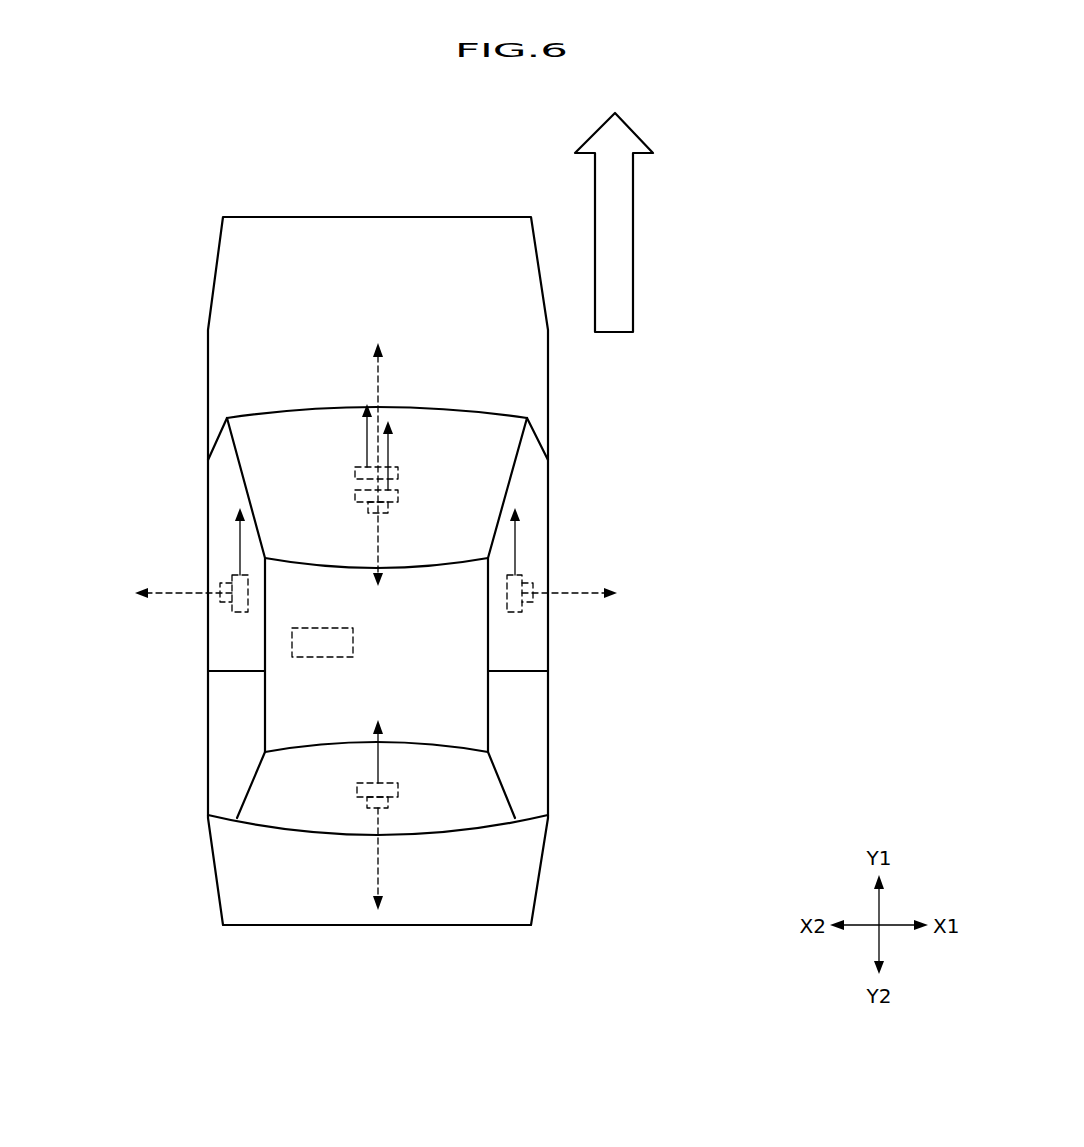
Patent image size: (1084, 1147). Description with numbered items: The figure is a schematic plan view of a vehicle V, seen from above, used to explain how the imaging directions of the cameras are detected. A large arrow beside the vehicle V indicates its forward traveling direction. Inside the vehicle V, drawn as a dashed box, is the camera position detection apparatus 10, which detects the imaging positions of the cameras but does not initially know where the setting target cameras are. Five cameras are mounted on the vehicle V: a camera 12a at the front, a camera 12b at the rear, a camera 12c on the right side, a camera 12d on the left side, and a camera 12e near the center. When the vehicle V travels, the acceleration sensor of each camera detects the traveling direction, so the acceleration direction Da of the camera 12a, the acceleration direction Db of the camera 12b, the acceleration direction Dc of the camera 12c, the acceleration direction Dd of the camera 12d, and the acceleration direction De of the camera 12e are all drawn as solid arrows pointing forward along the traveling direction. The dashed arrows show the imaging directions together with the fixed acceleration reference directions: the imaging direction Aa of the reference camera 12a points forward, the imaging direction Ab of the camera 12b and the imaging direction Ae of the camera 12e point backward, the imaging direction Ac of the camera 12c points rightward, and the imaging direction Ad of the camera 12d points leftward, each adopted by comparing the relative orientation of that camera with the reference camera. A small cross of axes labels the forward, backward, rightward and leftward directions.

The vehicle V is at (586, 363).
The camera position detection apparatus 10 is at (316, 661).
The camera 12a is at (340, 467).
The camera 12b is at (416, 797).
The camera 12c is at (539, 575).
The camera 12d is at (214, 575).
The camera 12e is at (414, 494).
The acceleration direction Da is at (367, 430).
The acceleration direction Db is at (378, 765).
The acceleration direction Dc is at (515, 545).
The acceleration direction Dd is at (240, 547).
The acceleration direction De is at (388, 447).
The imaging direction Aa is at (376, 392).
The imaging direction Ab is at (379, 857).
The imaging direction Ac is at (562, 593).
The imaging direction Ad is at (192, 593).
The imaging direction Ae is at (379, 533).